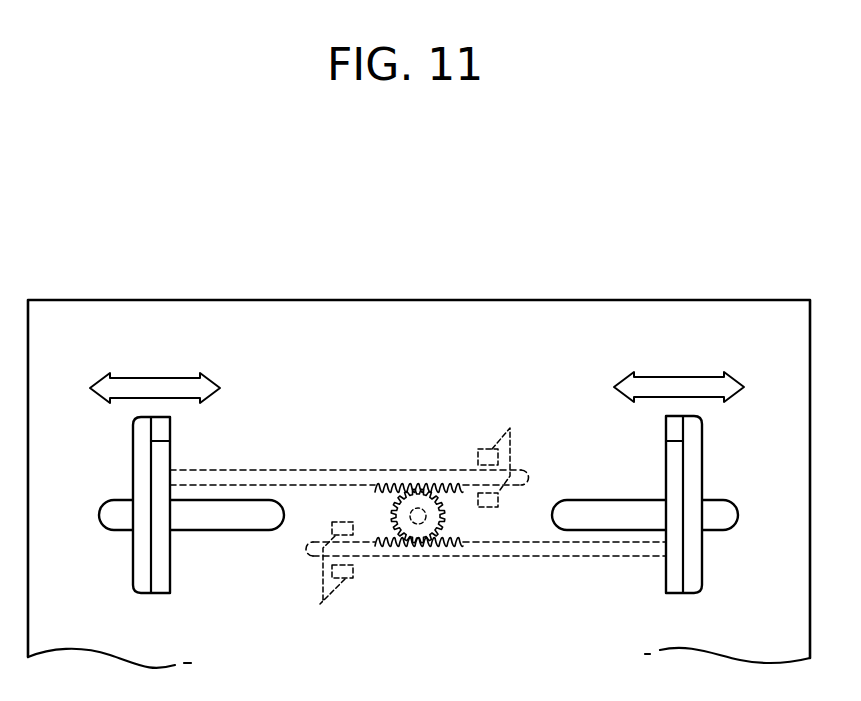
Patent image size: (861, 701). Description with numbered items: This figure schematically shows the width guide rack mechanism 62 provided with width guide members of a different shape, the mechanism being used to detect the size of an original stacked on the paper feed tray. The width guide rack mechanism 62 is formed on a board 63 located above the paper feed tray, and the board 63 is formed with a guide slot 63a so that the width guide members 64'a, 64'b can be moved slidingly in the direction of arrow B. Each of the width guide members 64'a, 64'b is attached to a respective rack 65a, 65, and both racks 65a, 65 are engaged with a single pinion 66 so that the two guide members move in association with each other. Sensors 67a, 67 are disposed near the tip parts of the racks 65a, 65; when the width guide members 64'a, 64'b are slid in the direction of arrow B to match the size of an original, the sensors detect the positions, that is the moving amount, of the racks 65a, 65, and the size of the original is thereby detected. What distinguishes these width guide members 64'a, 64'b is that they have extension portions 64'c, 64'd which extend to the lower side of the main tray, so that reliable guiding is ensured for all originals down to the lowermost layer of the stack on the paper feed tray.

The width guide rack mechanism 62 is at (446, 238).
The board 63 is at (558, 298).
The guide slot 63a is at (217, 531).
The width guide member 64'a is at (151, 503).
The width guide member 64'b is at (684, 503).
The extension portion 64'c is at (199, 427).
The extension portion 64'd is at (633, 427).
The rack 65 is at (524, 558).
The rack 65a is at (285, 470).
The pinion 66 is at (416, 485).
The sensor 67 is at (320, 604).
The sensor 67a is at (514, 421).